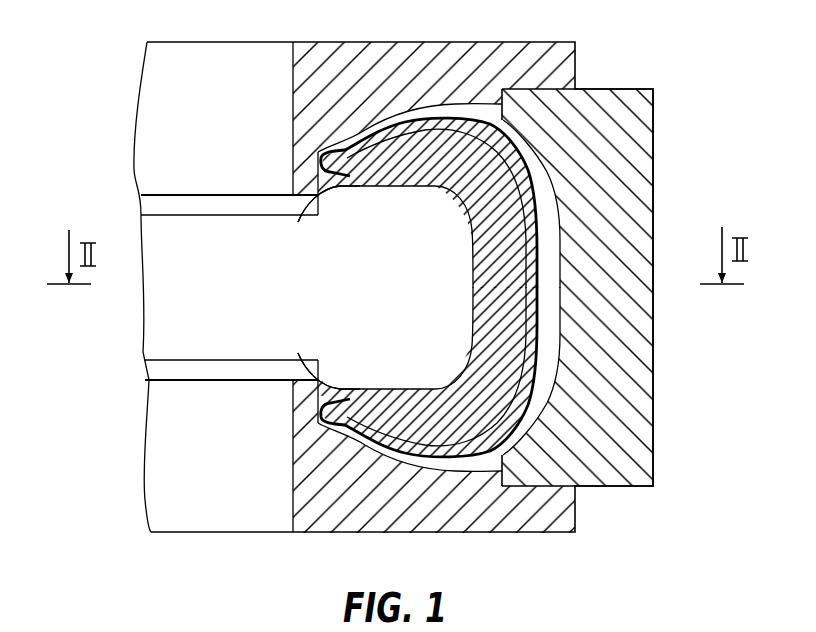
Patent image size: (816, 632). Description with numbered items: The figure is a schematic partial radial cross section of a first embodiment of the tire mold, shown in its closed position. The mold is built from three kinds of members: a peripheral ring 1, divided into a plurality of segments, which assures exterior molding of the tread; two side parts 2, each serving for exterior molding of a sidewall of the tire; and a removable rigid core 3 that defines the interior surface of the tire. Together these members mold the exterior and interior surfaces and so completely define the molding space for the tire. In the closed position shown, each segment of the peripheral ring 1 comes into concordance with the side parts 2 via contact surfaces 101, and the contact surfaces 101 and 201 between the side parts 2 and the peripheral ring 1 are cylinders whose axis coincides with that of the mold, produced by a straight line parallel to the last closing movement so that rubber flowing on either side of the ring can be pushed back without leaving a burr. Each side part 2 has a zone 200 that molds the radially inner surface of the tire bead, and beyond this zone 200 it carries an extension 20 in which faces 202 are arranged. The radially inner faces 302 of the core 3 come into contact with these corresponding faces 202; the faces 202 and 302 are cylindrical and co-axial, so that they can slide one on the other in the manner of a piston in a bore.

The peripheral ring 1 is at (667, 126).
The side part 2 is at (450, 42).
The removable rigid core 3 is at (496, 268).
The extension 20 is at (312, 197).
The contact surface 101 is at (500, 104).
The zone 200 is at (326, 162).
The contact surface 201 is at (505, 118).
The face 202 is at (336, 184).
The radially inner face 302 is at (316, 178).